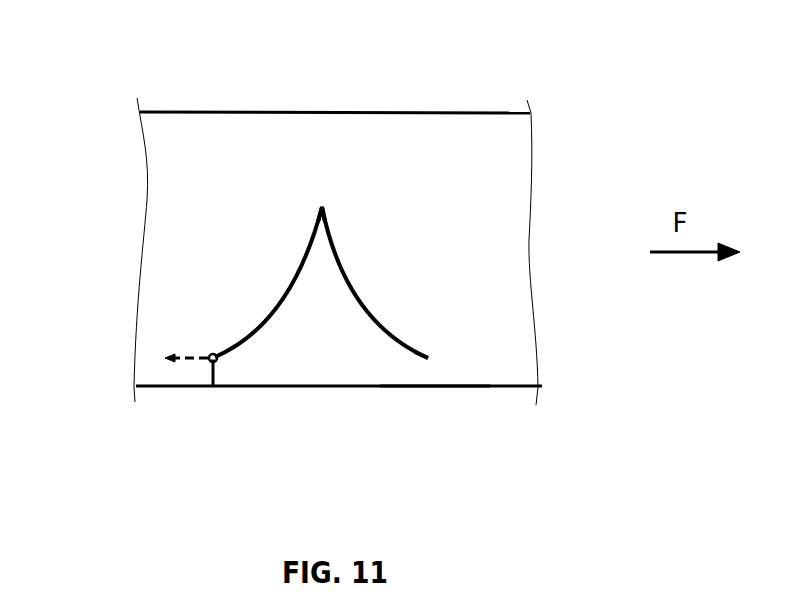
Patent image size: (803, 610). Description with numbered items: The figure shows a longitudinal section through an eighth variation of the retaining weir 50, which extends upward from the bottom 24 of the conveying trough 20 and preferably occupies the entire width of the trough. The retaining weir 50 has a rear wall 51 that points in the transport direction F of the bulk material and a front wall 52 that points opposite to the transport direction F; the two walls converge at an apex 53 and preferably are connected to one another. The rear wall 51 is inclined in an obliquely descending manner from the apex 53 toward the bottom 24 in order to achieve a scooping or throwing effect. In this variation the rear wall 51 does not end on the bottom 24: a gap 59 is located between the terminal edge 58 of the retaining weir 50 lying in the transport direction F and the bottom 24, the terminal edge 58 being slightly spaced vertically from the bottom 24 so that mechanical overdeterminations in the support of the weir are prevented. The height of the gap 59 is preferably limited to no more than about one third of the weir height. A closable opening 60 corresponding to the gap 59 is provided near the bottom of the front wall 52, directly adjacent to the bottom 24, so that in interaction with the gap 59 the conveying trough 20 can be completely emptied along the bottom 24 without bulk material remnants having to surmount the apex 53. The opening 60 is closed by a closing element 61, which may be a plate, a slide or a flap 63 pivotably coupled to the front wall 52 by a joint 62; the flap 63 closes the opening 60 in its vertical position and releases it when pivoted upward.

The conveying trough 20 is at (177, 111).
The bottom 24 is at (497, 392).
The retaining weir 50 is at (320, 189).
The rear wall 51 is at (345, 285).
The front wall 52 is at (280, 303).
The apex 53 is at (322, 207).
The terminal edge 58 is at (428, 358).
The gap 59 is at (430, 376).
The closable opening 60 is at (220, 372).
The closing element 61 is at (211, 378).
The joint 62 is at (209, 355).
The flap 63 is at (208, 368).